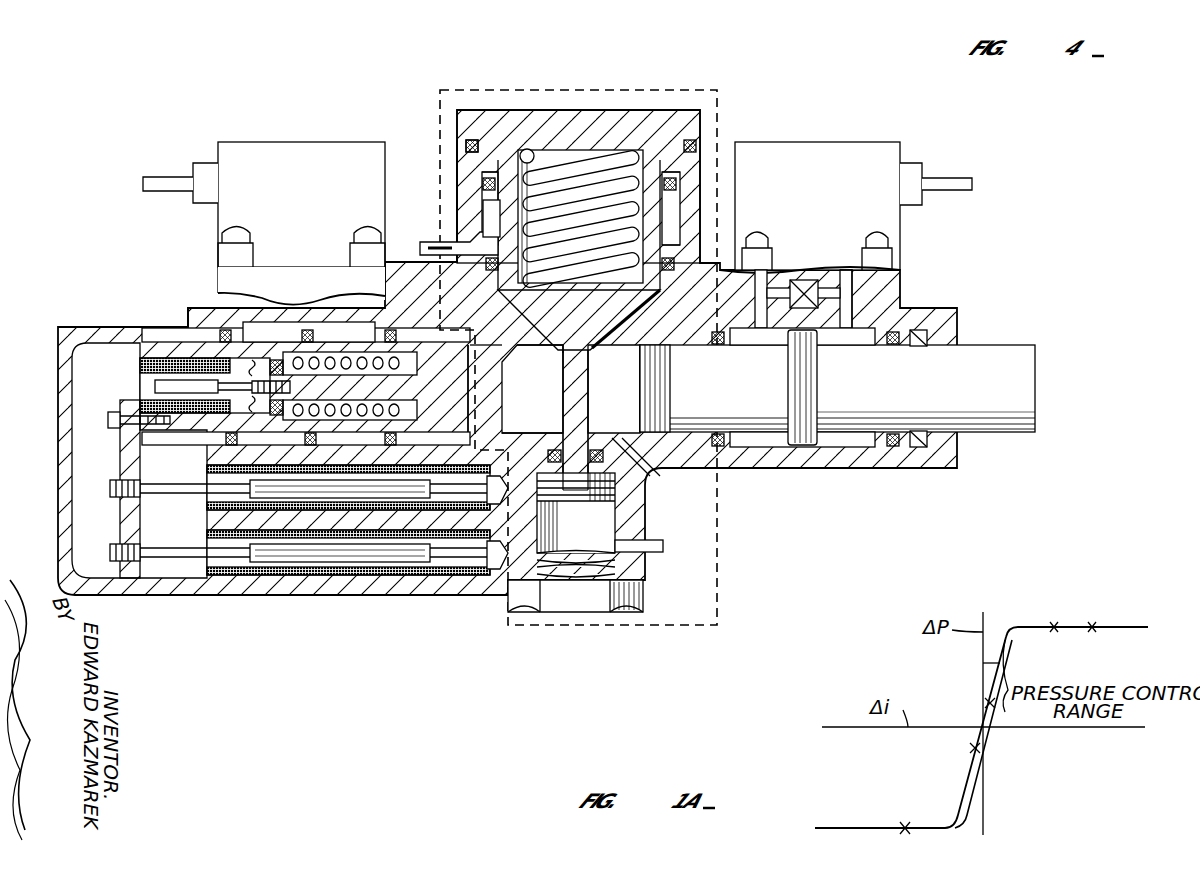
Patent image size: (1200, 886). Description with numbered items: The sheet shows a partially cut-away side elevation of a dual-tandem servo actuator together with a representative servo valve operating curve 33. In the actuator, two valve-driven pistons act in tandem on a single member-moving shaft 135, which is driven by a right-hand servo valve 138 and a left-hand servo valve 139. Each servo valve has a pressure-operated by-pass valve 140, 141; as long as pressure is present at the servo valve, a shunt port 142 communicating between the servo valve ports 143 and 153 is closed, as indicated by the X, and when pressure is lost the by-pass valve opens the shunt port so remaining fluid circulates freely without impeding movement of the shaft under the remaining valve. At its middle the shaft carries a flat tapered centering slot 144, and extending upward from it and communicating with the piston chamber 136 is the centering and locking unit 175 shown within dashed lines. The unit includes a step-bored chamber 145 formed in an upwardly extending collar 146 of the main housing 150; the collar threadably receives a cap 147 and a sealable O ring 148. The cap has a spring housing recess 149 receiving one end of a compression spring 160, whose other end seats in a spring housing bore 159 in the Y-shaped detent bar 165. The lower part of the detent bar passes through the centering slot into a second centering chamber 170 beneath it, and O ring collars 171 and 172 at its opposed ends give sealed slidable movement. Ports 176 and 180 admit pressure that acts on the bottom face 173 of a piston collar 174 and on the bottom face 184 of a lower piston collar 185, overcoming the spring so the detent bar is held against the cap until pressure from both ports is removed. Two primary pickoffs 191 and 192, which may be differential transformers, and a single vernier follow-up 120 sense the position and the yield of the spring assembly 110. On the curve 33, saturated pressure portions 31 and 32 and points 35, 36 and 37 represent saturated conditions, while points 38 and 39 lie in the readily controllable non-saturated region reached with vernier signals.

In FIG. 4, the spring assembly 110 is at (539, 372).
In FIG. 4, the vernier follow-up 120 is at (160, 366).
In FIG. 4, the shaft 135 is at (1000, 357).
In FIG. 4, the piston chamber 136 is at (486, 344).
In FIG. 4, the right-hand servo valve 138 is at (900, 142).
In FIG. 4, the left-hand servo valve 139 is at (285, 142).
In FIG. 4, the by-pass valve 140 is at (870, 270).
In FIG. 4, the by-pass valve 141 is at (301, 289).
In FIG. 4, the shunt port 142 is at (810, 280).
In FIG. 4, the servo valve port 143 is at (766, 334).
In FIG. 4, the centering slot 144 is at (693, 382).
In FIG. 4, the step-bored chamber 145 is at (485, 214).
In FIG. 4, the collar 146 is at (460, 162).
In FIG. 4, the cap 147 is at (588, 110).
In FIG. 4, the O ring 148 is at (474, 140).
In FIG. 4, the spring housing recess 149 is at (530, 149).
In FIG. 4, the main housing 150 is at (196, 305).
In FIG. 4, the servo valve port 153 is at (860, 302).
In FIG. 4, the spring housing bore 159 is at (690, 214).
In FIG. 4, the compression spring 160 is at (600, 168).
In FIG. 4, the detent bar 165 is at (562, 350).
In FIG. 4, the second centering chamber 170 is at (600, 518).
In FIG. 4, the O ring collar 171 is at (600, 452).
In FIG. 4, the O ring collar 172 is at (605, 302).
In FIG. 4, the bottom face 173 is at (486, 197).
In FIG. 4, the piston collar 174 is at (690, 187).
In FIG. 4, the centering and locking unit 175 is at (720, 90).
In FIG. 4, the port 176 is at (432, 245).
In FIG. 4, the port 180 is at (665, 548).
In FIG. 4, the bottom face 184 is at (580, 600).
In FIG. 4, the piston collar 185 is at (560, 462).
In FIG. 4, the primary pickoff 191 is at (205, 485).
In FIG. 4, the primary pickoff 192 is at (210, 545).
In FIG. 1A, the saturated pressure portion 31 is at (994, 716).
In FIG. 1A, the saturated pressure portion 32 is at (888, 819).
In FIG. 1A, the curve 33 is at (998, 668).
In FIG. 1A, the point 35 is at (1092, 632).
In FIG. 1A, the point 36 is at (1054, 632).
In FIG. 1A, the point 37 is at (950, 828).
In FIG. 1A, the point 38 is at (985, 706).
In FIG. 1A, the point 39 is at (973, 750).